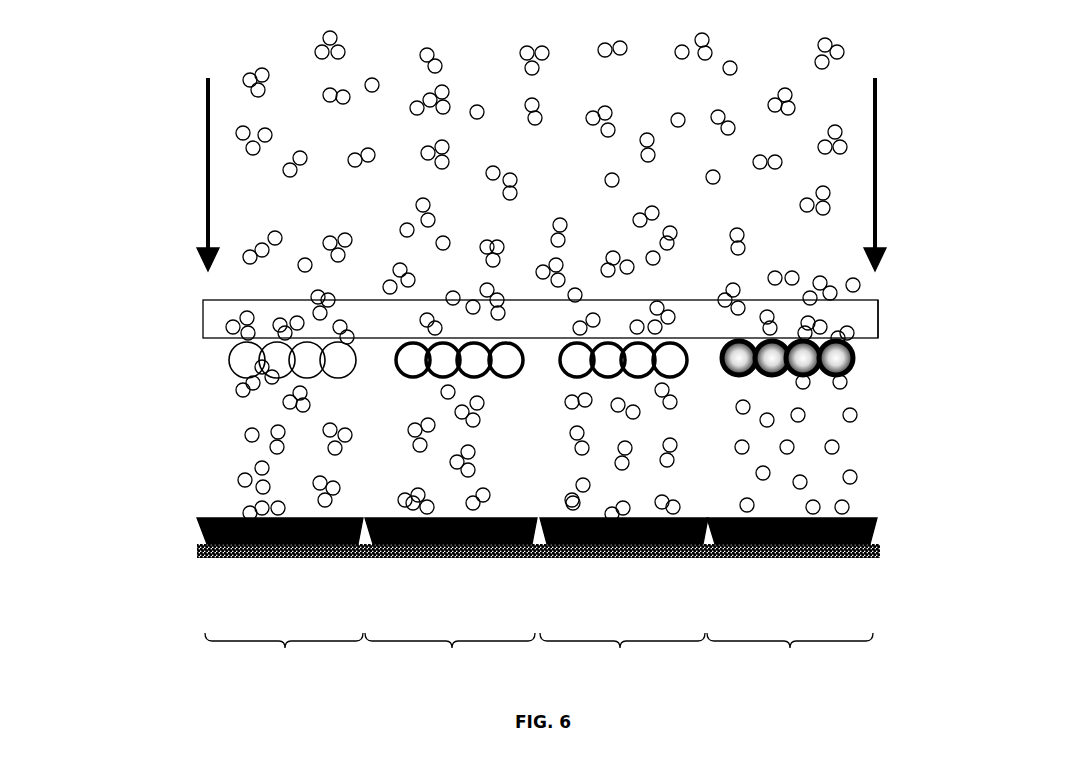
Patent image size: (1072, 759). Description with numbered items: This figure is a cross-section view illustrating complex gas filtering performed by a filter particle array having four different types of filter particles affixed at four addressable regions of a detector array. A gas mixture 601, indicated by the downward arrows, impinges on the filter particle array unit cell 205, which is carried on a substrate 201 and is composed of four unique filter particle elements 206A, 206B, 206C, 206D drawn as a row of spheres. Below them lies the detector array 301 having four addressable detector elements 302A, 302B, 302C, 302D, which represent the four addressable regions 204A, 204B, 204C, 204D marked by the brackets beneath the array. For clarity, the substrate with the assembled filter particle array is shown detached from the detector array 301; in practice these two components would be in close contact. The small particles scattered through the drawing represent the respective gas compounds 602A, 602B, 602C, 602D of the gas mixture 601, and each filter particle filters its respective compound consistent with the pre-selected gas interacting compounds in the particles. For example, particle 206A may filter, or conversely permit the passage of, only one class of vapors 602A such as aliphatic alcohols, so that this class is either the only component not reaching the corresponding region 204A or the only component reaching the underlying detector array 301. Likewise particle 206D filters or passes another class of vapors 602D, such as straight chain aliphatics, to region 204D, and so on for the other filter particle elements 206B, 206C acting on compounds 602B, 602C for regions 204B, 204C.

The gas mixture 601 is at (189, 130).
The substrate 201 is at (223, 318).
The filter particle array unit cell 205 is at (895, 313).
The filter particle element 206A is at (243, 364).
The filter particle element 206B is at (405, 375).
The filter particle element 206C is at (685, 375).
The filter particle element 206D is at (858, 360).
The gas compound 602A is at (246, 434).
The gas compound 602B is at (480, 447).
The gas compound 602C is at (672, 463).
The gas compound 602D is at (840, 447).
The detector array 301 is at (895, 544).
The addressable detector element 302A is at (280, 549).
The addressable detector element 302B is at (451, 549).
The addressable detector element 302C is at (624, 549).
The addressable detector element 302D is at (792, 549).
The addressable region 204A is at (258, 676).
The addressable region 204B is at (427, 676).
The addressable region 204C is at (600, 676).
The addressable region 204D is at (772, 676).